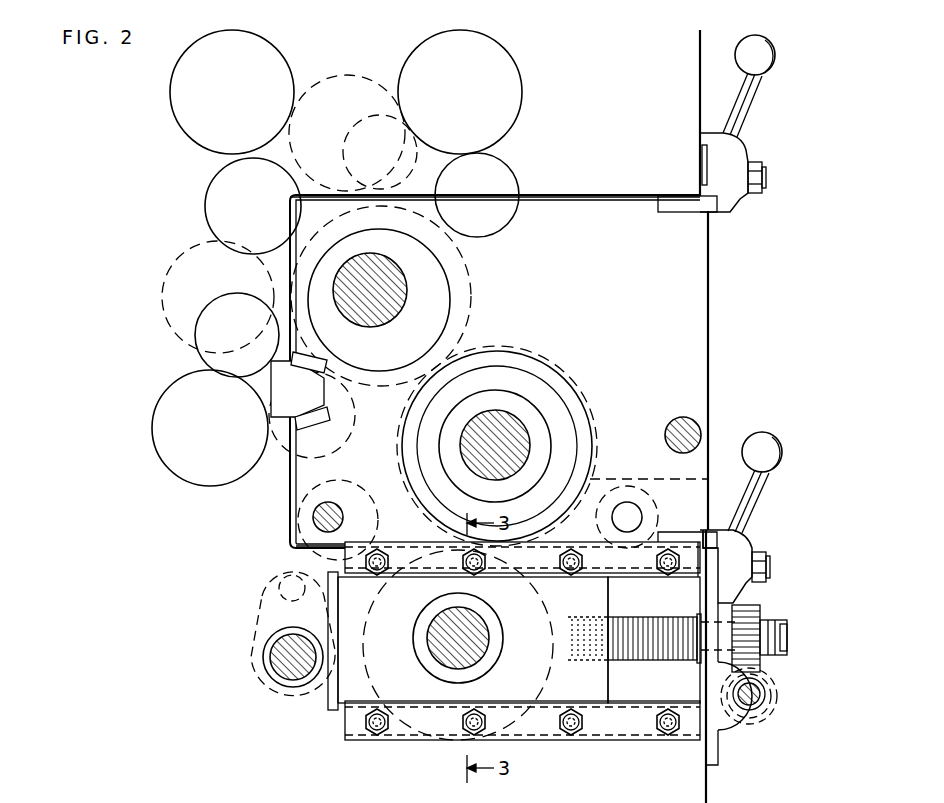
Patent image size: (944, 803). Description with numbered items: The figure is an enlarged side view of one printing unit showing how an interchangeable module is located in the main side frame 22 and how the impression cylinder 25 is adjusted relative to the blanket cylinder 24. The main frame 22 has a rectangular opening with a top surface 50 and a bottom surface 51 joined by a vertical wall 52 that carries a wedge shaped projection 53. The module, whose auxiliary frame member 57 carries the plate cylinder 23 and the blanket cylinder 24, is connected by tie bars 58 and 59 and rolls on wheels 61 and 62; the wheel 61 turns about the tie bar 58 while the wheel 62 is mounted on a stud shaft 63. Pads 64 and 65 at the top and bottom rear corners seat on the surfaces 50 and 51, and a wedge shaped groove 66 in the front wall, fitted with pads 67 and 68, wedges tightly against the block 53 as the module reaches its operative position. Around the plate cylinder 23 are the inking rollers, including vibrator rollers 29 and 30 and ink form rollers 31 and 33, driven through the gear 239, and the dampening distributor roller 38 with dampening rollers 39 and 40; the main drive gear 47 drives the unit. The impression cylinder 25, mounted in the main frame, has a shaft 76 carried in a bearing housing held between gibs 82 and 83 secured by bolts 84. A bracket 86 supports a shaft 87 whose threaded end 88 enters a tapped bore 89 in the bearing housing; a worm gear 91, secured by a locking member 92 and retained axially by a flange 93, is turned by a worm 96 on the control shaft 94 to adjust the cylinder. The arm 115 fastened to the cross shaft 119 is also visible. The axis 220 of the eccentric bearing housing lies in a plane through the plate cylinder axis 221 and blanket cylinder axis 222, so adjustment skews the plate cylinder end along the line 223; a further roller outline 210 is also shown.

The main side frame 22 is at (697, 64).
The plate cylinder 23 is at (467, 263).
The blanket cylinder 24 is at (563, 376).
The impression cylinder 25 is at (380, 677).
The vibrator roller 29 is at (172, 118).
The vibrator roller 30 is at (521, 77).
The ink form roller 31 is at (207, 196).
The ink form roller 33 is at (511, 168).
The distributor roller 38 is at (163, 461).
The dampening roller 39 is at (195, 347).
The dampening roller 40 is at (280, 447).
The main drive gear 47 is at (163, 296).
The top surface 50 is at (584, 200).
The bottom surface 51 is at (297, 540).
The vertical wall 52 is at (290, 262).
The wedge shaped projection 53 is at (288, 398).
The auxiliary frame member 57 is at (700, 355).
The tie bar 58 is at (312, 517).
The tie bar 59 is at (690, 428).
The wheel 61 is at (290, 497).
The wheel 62 is at (634, 478).
The stud shaft 63 is at (627, 517).
The pad 64 is at (692, 206).
The pad 65 is at (677, 532).
The wedge shaped groove 66 is at (326, 385).
The pad 67 is at (318, 360).
The pad 68 is at (310, 420).
The shaft 76 is at (453, 657).
The gib 82 is at (433, 560).
The gib 83 is at (422, 730).
The bolt 84 is at (368, 730).
The bracket 86 is at (722, 716).
The shaft 87 is at (787, 645).
The threaded end 88 is at (627, 632).
The tapped bore 89 is at (555, 728).
The worm gear 91 is at (752, 614).
The locking member 92 is at (780, 636).
The flange 93 is at (697, 660).
The control shaft 94 is at (765, 693).
The worm 96 is at (776, 714).
The arm 115 is at (260, 614).
The cross shaft 119 is at (282, 662).
The roller 210 is at (427, 330).
The axis of the eccentric bearing housing 220 is at (382, 300).
The axis of the plate cylinder 221 is at (373, 292).
The axis of the blanket cylinder 222 is at (500, 440).
The line 223 is at (379, 286).
The gear 239 is at (332, 78).